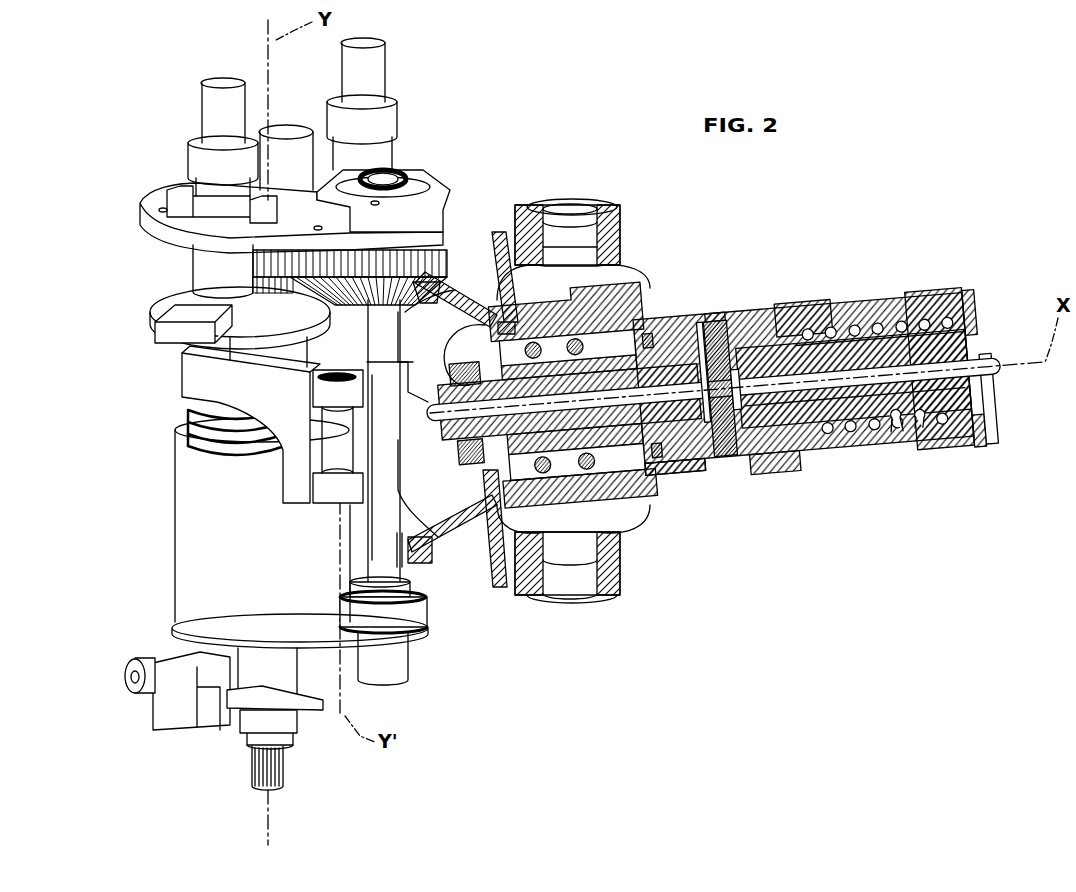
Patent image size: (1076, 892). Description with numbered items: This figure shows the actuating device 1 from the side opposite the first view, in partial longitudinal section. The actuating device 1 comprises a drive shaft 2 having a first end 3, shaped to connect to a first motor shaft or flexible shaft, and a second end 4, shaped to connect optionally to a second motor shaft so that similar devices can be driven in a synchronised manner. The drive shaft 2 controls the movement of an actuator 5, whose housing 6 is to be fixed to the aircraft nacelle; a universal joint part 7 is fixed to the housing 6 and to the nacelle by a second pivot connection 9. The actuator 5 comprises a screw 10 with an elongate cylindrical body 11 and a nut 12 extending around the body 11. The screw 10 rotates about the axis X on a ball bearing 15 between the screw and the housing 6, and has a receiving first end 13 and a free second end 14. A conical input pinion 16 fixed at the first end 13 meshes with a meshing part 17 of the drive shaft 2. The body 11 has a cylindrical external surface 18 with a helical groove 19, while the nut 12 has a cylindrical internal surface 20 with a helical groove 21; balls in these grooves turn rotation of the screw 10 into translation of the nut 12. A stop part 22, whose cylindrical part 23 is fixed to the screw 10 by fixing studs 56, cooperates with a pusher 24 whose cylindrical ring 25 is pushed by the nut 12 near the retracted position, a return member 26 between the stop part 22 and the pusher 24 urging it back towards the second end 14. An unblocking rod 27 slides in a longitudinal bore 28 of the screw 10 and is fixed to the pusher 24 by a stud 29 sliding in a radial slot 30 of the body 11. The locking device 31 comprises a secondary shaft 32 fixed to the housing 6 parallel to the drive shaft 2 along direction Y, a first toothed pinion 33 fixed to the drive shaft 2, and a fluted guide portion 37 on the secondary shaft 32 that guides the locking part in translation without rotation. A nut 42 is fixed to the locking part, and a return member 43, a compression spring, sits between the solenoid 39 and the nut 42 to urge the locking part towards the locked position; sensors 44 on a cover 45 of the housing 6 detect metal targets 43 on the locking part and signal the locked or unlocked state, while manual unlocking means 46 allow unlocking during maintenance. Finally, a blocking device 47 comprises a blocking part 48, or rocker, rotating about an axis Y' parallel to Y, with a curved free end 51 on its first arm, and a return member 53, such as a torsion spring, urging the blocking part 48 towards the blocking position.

The actuating device 1 is at (68, 110).
The drive shaft 2 is at (412, 440).
The first end 3 is at (395, 658).
The second end 4 is at (400, 183).
The actuator 5 is at (822, 278).
The housing 6 is at (560, 500).
The universal joint part 7 is at (600, 282).
The second pivot connection 9 is at (583, 197).
The screw 10 is at (855, 412).
The body 11 is at (948, 400).
The nut 12 is at (896, 313).
The first end 13 is at (443, 432).
The second end 14 is at (965, 340).
The ball bearing 15 is at (565, 330).
The conical input pinion 16 is at (477, 510).
The meshing part 17 is at (437, 290).
The cylindrical external surface 18 is at (867, 335).
The helical groove 19 is at (907, 325).
The cylindrical internal surface 20 is at (918, 433).
The helical groove 21 is at (893, 440).
The stop part 22 is at (722, 330).
The cylindrical part 23 is at (680, 455).
The pusher 24 is at (775, 323).
The cylindrical ring 25 is at (757, 470).
The return member 26 is at (677, 350).
The unblocking rod 27 is at (692, 396).
The longitudinal bore 28 is at (812, 388).
The stud 29 is at (730, 360).
The radial slot 30 is at (707, 367).
The locking device 31 is at (130, 505).
The secondary shaft 32 is at (290, 768).
The first toothed pinion 33 is at (520, 310).
The fluted guide portion 37 is at (245, 283).
The solenoid 39 is at (190, 572).
The nut 42 is at (200, 405).
The return member 43 is at (165, 320).
The sensors 44 is at (215, 105).
The cover 45 is at (157, 228).
The manual unlocking means 46 is at (180, 710).
The blocking device 47 is at (100, 372).
The blocking part 48 is at (237, 388).
The free end 51 is at (200, 352).
The return member 53 is at (335, 443).
The fixing studs 56 is at (653, 340).